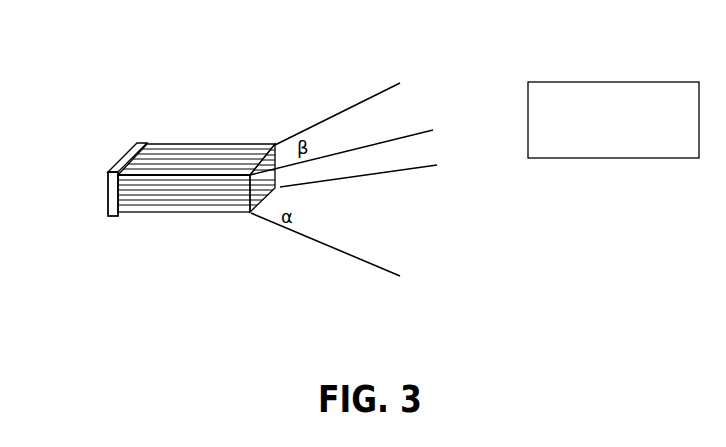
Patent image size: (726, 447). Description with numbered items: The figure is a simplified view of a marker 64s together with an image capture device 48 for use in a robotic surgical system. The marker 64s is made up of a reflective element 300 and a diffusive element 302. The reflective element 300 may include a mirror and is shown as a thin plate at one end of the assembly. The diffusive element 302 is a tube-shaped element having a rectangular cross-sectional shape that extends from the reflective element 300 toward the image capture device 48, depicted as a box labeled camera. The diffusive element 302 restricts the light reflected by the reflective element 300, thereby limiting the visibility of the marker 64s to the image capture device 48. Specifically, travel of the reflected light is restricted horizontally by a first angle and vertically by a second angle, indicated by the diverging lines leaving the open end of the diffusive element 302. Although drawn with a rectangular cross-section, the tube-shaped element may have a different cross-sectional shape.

The diffusive element 302 is at (215, 144).
The reflective element 300 is at (108, 190).
The marker 64s is at (121, 166).
The image capture device 48 is at (543, 82).